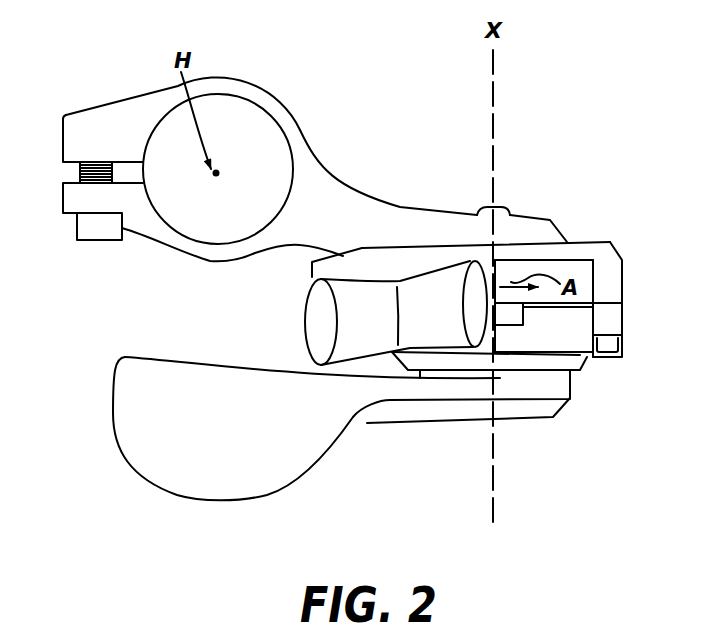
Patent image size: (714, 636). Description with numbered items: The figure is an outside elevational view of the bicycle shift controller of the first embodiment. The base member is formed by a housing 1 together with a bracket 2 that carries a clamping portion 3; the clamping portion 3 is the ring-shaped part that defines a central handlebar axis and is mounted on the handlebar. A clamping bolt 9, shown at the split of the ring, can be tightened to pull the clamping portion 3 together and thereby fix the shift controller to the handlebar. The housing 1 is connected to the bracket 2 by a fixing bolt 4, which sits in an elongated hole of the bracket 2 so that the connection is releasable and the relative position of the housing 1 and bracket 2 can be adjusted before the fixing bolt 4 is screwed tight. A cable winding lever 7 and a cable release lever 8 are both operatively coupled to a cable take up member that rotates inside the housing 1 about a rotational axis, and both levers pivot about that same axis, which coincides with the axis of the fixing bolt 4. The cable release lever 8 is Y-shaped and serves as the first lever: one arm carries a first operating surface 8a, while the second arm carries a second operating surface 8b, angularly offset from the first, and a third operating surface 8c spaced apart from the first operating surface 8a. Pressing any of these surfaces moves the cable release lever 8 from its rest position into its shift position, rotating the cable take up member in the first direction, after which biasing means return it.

The housing 1 is at (613, 248).
The bracket 2 is at (337, 178).
The clamping portion 3 is at (270, 88).
The fixing bolt 4 is at (503, 207).
The cable winding lever 7 is at (253, 447).
The cable release lever 8 is at (292, 302).
The first operating surface 8a is at (303, 338).
The second operating surface 8b is at (443, 323).
The third operating surface 8c is at (495, 338).
The clamping bolt 9 is at (95, 241).